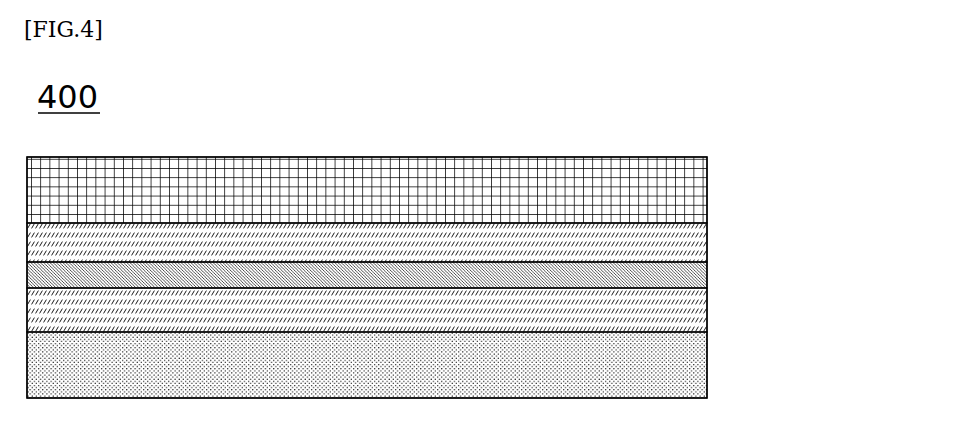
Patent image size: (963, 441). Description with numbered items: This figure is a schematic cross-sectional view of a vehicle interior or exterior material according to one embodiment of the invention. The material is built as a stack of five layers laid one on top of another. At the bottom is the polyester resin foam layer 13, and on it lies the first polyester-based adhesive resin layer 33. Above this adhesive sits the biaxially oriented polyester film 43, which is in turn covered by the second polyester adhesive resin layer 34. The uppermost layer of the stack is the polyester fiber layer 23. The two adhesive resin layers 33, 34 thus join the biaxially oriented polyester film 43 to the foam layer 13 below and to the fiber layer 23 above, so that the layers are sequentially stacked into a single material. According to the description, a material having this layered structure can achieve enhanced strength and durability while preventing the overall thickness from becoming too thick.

The polyester resin foam layer 13 is at (707, 358).
The polyester fiber layer 23 is at (707, 192).
The first polyester-based adhesive resin layer 33 is at (707, 318).
The second polyester adhesive resin layer 34 is at (707, 235).
The biaxially oriented polyester film 43 is at (707, 278).